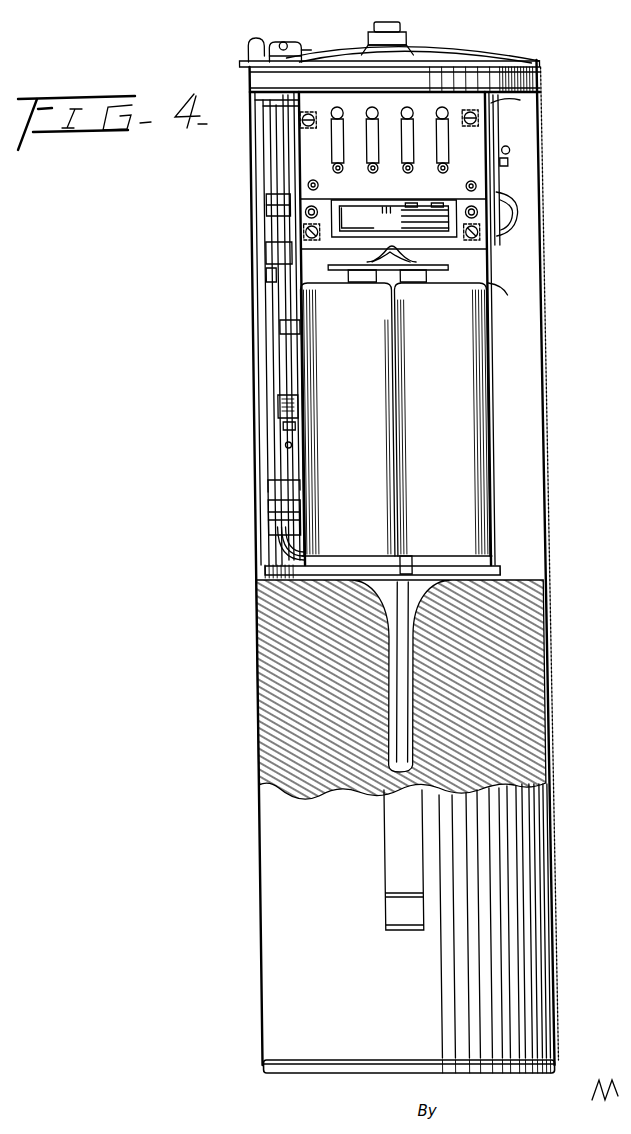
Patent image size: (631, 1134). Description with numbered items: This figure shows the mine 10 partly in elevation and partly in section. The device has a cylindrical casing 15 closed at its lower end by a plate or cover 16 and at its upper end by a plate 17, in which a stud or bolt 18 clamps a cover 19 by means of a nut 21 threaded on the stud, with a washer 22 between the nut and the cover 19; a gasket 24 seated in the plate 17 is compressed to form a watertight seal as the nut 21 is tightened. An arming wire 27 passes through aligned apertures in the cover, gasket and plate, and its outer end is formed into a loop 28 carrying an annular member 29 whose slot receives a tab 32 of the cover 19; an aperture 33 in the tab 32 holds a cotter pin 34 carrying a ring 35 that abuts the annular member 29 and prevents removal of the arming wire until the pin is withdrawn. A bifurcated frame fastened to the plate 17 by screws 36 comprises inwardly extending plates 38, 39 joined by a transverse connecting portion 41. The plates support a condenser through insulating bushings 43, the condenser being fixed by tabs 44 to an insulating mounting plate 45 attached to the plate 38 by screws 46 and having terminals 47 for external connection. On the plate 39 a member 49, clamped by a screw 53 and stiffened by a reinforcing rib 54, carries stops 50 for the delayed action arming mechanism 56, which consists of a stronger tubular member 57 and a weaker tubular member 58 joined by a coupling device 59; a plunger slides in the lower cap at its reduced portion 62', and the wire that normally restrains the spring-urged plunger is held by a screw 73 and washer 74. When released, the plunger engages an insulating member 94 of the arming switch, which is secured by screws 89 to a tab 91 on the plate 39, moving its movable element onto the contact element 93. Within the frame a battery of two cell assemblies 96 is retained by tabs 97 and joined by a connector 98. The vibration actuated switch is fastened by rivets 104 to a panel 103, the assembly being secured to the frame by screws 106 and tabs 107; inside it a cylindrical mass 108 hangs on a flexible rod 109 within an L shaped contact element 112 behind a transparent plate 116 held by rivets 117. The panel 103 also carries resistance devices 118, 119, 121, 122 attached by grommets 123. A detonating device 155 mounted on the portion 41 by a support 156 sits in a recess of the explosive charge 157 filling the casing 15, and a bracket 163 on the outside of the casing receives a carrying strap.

The housing 10 is at (542, 137).
The casing 15 is at (540, 312).
The plate or cover 16 is at (252, 1066).
The plate 17 is at (538, 85).
The stud or bolt 18 is at (392, 24).
The cover 19 is at (455, 54).
The nut 21 is at (408, 37).
The washer 22 is at (415, 50).
The gasket 24 is at (541, 71).
The arming wire 27 is at (268, 158).
The loop 28 is at (248, 42).
The annular member 29 is at (320, 58).
The tab 32 is at (298, 40).
The aperture 33 is at (290, 42).
The cotter pin 34 is at (282, 42).
The ring 35 is at (303, 46).
The screws 36 is at (262, 98).
The plate or portion 38 is at (489, 286).
The plate or portion 39 is at (290, 106).
The transverse connecting portion 41 is at (494, 572).
The caps or bushings 43 is at (283, 130).
The tabs 44 is at (499, 150).
The mounting plate 45 is at (538, 152).
The screws 46 is at (510, 122).
The terminals 47 is at (506, 162).
The member 49 is at (285, 338).
The tabs or stops 50 is at (265, 250).
The screw 53 is at (280, 120).
The reinforcing rib 54 is at (290, 373).
The delayed action arming mechanism 56 is at (290, 460).
The tubular member 57 is at (292, 427).
The tubular member 58 is at (270, 292).
The coupling device 59 is at (297, 332).
The reduced portion 62' is at (238, 465).
The screw 73 is at (268, 197).
The washer 74 is at (266, 212).
The screws 89 is at (300, 528).
The tab 91 is at (295, 486).
The contact element 93 is at (270, 522).
The insulating member 94 is at (270, 510).
The cell assemblies 96 is at (395, 419).
The tabs 97 is at (316, 284).
The connector 98 is at (422, 282).
The panel 103 is at (417, 92).
The rivets 104 is at (312, 180).
The screws 106 is at (308, 113).
The tabs 107 is at (317, 117).
The mass 108 is at (345, 209).
The flexible resilient rod or wire 109 is at (382, 215).
The L shaped contact element 112 is at (332, 247).
The plate 116 is at (418, 246).
The rivets 117 is at (312, 206).
The resistance device 118 is at (331, 138).
The resistance device 119 is at (366, 118).
The resistance device 121 is at (413, 118).
The resistance device 122 is at (448, 116).
The grommets 123 is at (379, 118).
The detonating device 155 is at (392, 606).
The support 156 is at (407, 561).
The explosive charge 157 is at (534, 622).
The bracket or strap 163 is at (404, 860).